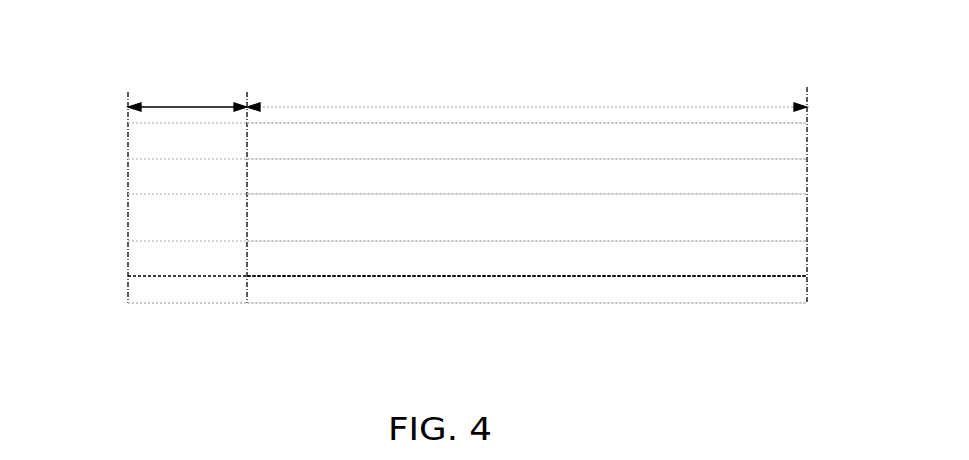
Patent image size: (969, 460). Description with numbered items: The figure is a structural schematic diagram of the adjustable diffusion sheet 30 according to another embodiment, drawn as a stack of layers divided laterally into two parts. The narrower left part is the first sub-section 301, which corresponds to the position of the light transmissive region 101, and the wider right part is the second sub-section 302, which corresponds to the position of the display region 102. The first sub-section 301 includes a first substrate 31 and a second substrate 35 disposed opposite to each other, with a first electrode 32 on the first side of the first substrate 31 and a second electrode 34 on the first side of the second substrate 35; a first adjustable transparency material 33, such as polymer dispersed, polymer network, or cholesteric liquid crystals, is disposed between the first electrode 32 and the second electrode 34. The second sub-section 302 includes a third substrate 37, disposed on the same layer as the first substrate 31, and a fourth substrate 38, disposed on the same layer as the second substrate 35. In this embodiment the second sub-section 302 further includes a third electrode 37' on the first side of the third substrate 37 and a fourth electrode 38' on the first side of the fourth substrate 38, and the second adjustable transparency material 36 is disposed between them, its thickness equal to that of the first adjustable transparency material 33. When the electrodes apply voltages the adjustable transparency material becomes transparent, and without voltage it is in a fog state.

The adjustable diffusion sheet 30 is at (51, 28).
The first substrate 31 is at (128, 135).
The first electrode 32 is at (133, 182).
The first adjustable transparency material 33 is at (135, 228).
The second electrode 34 is at (135, 267).
The second substrate 35 is at (129, 297).
The second adjustable transparency material 36 is at (798, 225).
The third substrate 37 is at (552, 112).
The third electrode 37' is at (559, 150).
The fourth substrate 38 is at (561, 264).
The fourth electrode 38' is at (562, 230).
The light transmissive region 101 is at (187, 97).
The display region 102 is at (527, 98).
The first sub-section 301 is at (205, 303).
The second sub-section 302 is at (522, 303).